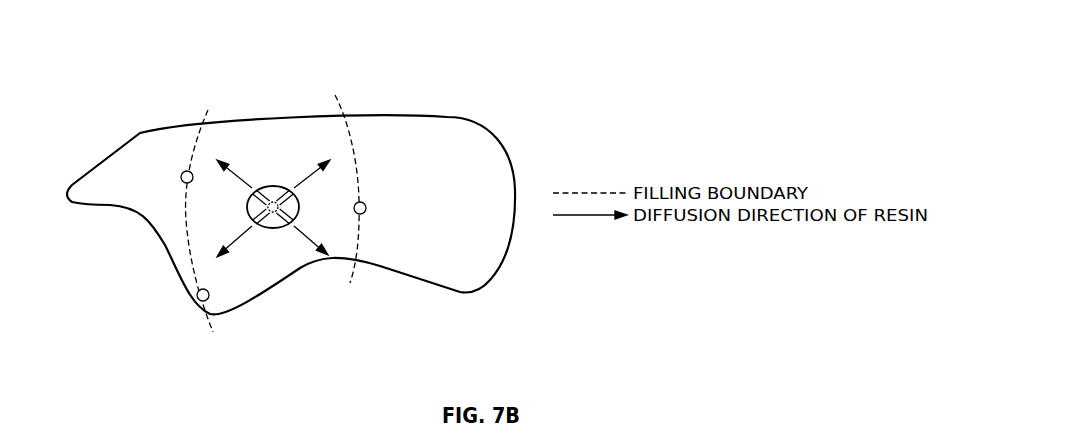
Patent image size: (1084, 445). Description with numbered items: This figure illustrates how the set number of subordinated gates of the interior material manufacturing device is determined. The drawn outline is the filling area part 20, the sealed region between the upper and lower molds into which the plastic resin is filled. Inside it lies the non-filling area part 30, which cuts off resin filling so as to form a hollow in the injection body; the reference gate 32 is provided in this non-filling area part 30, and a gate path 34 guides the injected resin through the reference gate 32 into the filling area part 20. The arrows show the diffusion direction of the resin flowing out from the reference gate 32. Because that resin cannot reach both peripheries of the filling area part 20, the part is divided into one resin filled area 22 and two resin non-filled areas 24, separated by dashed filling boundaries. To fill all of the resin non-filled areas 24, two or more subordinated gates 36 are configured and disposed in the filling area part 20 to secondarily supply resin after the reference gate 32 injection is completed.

The filling area part 20 is at (467, 107).
The resin filled area 22 is at (310, 135).
The resin non-filled area 24 is at (173, 143).
The non-filling area part 30 is at (272, 226).
The reference gate 32 is at (275, 200).
The gate path 34 is at (254, 190).
The subordinated gate 36 is at (183, 171).